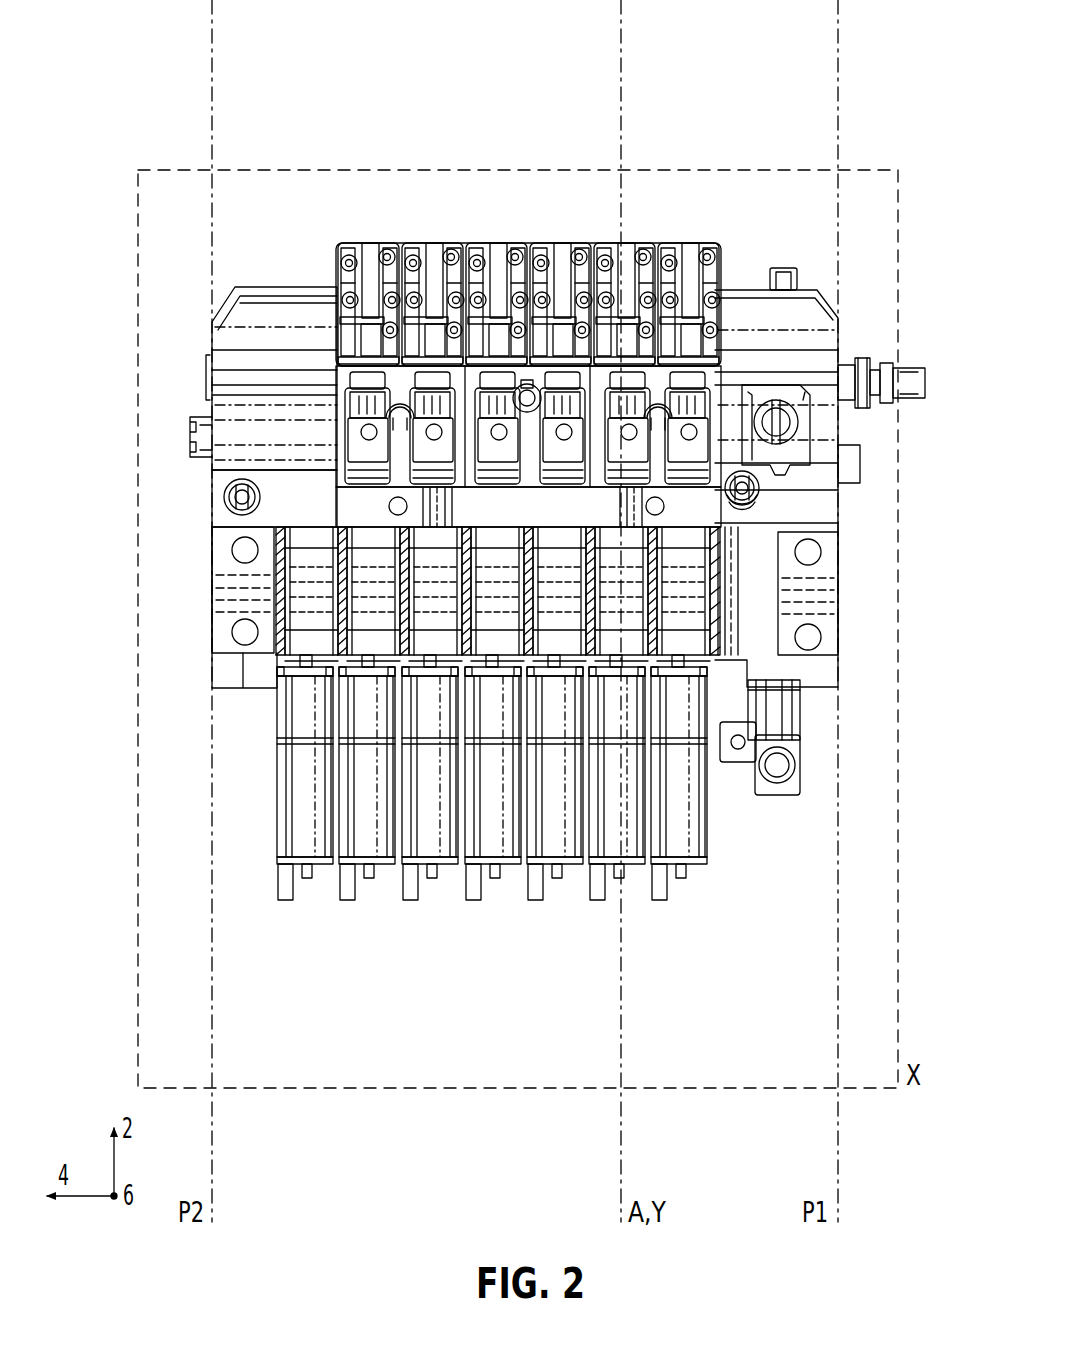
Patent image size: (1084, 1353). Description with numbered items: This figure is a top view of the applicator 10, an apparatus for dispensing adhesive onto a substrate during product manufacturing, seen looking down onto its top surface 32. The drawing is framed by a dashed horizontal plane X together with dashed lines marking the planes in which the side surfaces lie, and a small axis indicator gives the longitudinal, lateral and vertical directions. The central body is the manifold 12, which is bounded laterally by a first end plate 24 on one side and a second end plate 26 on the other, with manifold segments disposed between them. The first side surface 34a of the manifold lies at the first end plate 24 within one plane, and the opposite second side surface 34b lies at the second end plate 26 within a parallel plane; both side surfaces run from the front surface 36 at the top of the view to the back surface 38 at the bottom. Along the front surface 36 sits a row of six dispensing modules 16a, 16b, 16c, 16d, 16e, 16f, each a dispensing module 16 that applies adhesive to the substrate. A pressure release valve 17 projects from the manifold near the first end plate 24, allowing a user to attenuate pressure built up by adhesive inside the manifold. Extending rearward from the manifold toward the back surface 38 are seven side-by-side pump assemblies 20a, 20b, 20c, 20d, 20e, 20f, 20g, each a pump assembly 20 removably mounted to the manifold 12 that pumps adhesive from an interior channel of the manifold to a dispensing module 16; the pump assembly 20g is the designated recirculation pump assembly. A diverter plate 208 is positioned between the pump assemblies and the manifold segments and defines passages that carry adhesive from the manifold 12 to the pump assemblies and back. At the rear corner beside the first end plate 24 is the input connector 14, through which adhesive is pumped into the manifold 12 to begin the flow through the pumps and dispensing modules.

The applicator 10 is at (154, 104).
The manifold 12 is at (208, 499).
The input connector 14 is at (814, 764).
The dispensing module 16 is at (553, 238).
The dispensing module 16a is at (688, 241).
The dispensing module 16b is at (633, 241).
The dispensing module 16c is at (567, 241).
The dispensing module 16d is at (502, 241).
The dispensing module 16e is at (438, 241).
The dispensing module 16f is at (368, 241).
The pressure release valve 17 is at (792, 266).
The pump assembly 20 is at (525, 832).
The pump assembly 20a is at (687, 906).
The pump assembly 20b is at (624, 906).
The pump assembly 20c is at (561, 906).
The pump assembly 20d is at (497, 906).
The pump assembly 20e is at (432, 906).
The pump assembly 20f is at (368, 906).
The recirculation pump assembly 20g is at (306, 906).
The first end plate 24 is at (850, 424).
The second end plate 26 is at (228, 336).
The top surface 32 is at (283, 410).
The first side surface 34a is at (852, 625).
The second side surface 34b is at (210, 600).
The front surface 36 is at (291, 279).
The back surface 38 is at (242, 690).
The diverter plate 208 is at (704, 513).